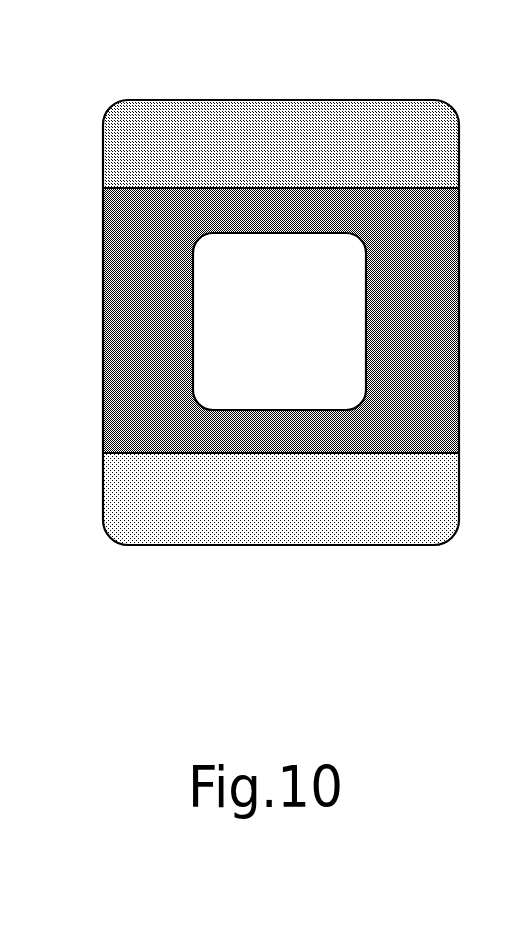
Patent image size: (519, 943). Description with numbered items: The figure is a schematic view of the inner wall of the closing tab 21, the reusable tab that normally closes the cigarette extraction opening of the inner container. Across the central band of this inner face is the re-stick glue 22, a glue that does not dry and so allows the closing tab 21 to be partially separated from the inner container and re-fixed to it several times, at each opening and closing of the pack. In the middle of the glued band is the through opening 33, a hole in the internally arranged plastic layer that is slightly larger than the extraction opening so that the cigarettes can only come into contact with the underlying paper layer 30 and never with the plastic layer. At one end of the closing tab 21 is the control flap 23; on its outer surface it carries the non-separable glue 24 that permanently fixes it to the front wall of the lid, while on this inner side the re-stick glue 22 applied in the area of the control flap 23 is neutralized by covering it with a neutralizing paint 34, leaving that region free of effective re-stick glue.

The closing tab 21 is at (281, 431).
The re-stick glue 22 is at (433, 304).
The control flap 23 is at (85, 545).
The non-separable glue 24 is at (428, 153).
The paper layer 30 is at (279, 437).
The through opening 33 is at (258, 240).
The neutralizing paint 34 is at (425, 495).